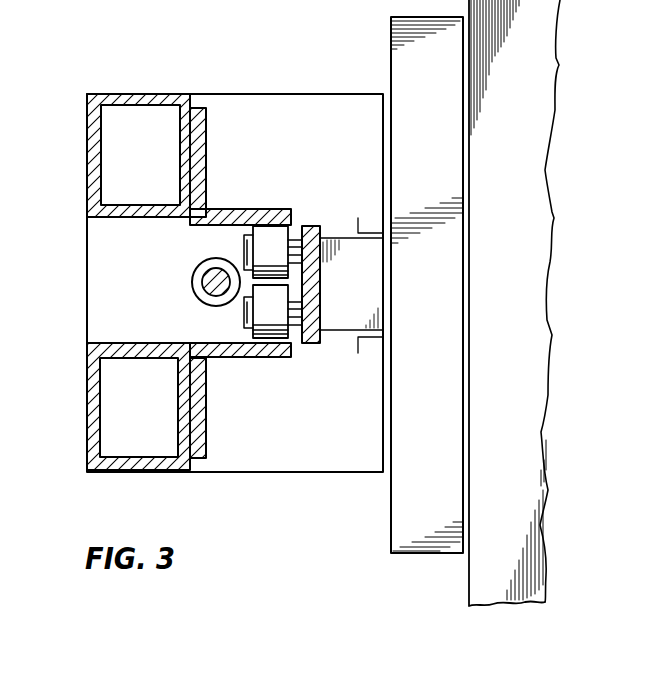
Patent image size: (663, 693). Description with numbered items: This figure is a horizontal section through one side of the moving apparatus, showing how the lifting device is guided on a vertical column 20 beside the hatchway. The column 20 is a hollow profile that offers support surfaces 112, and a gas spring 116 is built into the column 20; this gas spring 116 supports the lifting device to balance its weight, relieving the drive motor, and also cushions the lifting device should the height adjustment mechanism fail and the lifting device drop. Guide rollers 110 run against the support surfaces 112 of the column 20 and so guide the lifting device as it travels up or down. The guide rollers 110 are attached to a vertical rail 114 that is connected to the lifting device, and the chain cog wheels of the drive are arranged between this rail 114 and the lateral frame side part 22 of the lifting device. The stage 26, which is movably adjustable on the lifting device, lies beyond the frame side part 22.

The vertical column 20 is at (82, 304).
The frame side part 22 is at (395, 507).
The stage 26 is at (522, 221).
The guide roller 110 is at (283, 210).
The support surface 112 is at (273, 242).
The vertical rail 114 is at (322, 250).
The gas spring 116 is at (202, 282).